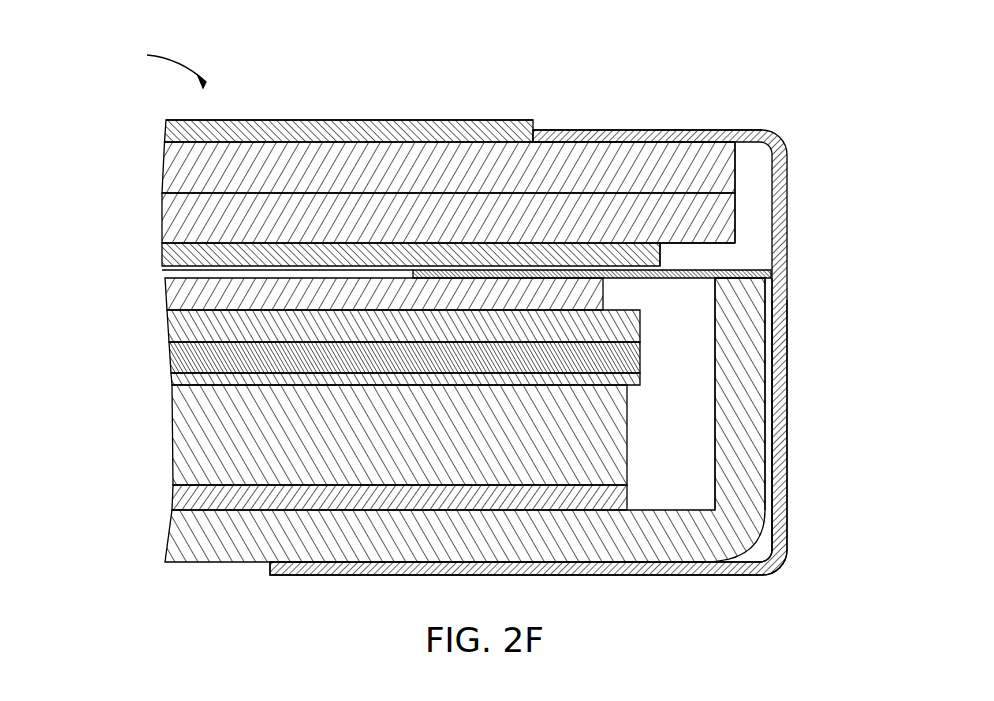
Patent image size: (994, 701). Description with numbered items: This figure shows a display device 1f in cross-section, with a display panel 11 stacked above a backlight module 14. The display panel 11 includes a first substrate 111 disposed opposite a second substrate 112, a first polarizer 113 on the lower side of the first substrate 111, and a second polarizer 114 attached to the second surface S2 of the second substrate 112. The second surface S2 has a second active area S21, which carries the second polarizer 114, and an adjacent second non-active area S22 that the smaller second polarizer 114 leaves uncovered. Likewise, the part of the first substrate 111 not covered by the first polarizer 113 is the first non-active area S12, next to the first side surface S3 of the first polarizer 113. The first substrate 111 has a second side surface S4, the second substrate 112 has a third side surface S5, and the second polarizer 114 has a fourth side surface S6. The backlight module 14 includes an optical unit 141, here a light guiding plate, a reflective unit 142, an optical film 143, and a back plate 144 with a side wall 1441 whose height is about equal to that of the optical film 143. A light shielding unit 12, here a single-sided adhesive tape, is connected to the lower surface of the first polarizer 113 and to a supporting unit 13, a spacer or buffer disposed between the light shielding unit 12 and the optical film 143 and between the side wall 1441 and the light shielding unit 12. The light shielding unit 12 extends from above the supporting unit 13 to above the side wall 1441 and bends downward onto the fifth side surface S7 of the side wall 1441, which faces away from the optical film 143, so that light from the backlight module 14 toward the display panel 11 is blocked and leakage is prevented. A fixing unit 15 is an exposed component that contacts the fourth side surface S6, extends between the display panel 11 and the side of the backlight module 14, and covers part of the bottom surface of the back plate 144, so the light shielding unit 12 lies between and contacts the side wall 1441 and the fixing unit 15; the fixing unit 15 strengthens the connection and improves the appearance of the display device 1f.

The display device 1f is at (159, 65).
The display panel 11 is at (98, 115).
The first substrate 111 is at (164, 215).
The second substrate 112 is at (166, 173).
The first polarizer 113 is at (164, 258).
The second polarizer 114 is at (165, 133).
The light shielding unit 12 is at (773, 302).
The supporting unit 13 is at (760, 280).
The backlight module 14 is at (102, 300).
The optical unit 141 is at (192, 447).
The reflective unit 142 is at (181, 498).
The optical film 143 is at (166, 280).
The back plate 144 is at (435, 420).
The side wall 1441 is at (727, 358).
The fixing unit 15 is at (712, 130).
The second surface S2 is at (580, 70).
The second active area S21 is at (503, 121).
The second non-active area S22 is at (575, 130).
The first side surface S3 is at (661, 253).
The second side surface S4 is at (736, 215).
The third side surface S5 is at (736, 167).
The fourth side surface S6 is at (551, 143).
The fifth side surface S7 is at (768, 367).
The first non-active area S12 is at (693, 243).